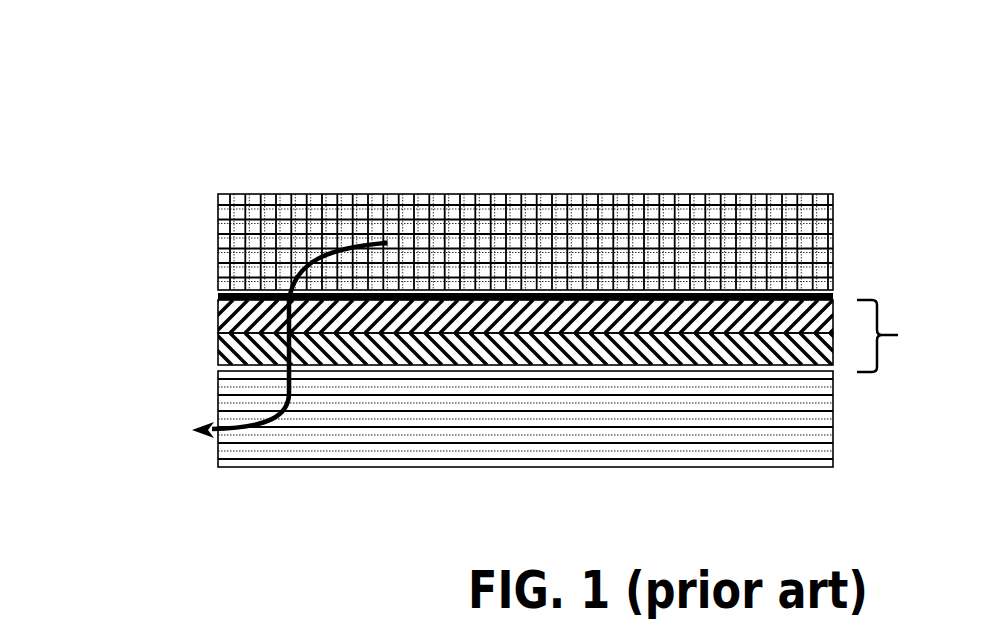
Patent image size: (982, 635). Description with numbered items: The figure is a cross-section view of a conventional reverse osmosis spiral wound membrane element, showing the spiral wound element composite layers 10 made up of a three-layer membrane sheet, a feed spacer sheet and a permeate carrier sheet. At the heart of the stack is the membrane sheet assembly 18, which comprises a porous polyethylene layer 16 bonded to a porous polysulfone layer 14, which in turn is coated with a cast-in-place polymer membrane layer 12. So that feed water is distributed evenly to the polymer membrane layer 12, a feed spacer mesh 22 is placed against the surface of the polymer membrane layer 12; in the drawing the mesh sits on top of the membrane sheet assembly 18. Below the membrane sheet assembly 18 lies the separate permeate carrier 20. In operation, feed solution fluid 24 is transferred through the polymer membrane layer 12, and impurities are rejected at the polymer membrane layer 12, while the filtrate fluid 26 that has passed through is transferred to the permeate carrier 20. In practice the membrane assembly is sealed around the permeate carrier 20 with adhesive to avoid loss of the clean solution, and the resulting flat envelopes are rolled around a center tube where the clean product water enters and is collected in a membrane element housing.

The spiral wound element composite layers 10 is at (249, 106).
The cast-in-place polymer membrane layer 12 is at (218, 296).
The porous polysulfone layer 14 is at (235, 318).
The porous polyethylene layer 16 is at (253, 355).
The membrane sheet assembly 18 is at (905, 336).
The permeate carrier 20 is at (305, 447).
The feed spacer mesh 22 is at (657, 213).
The feed solution fluid 24 is at (320, 262).
The filtrate fluid 26 is at (215, 433).